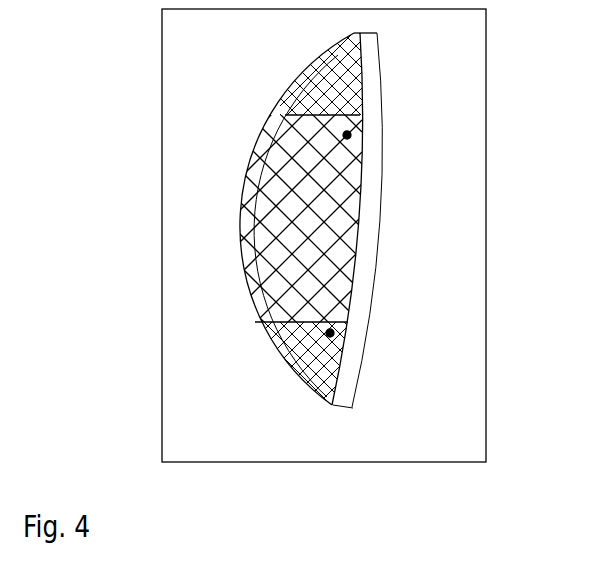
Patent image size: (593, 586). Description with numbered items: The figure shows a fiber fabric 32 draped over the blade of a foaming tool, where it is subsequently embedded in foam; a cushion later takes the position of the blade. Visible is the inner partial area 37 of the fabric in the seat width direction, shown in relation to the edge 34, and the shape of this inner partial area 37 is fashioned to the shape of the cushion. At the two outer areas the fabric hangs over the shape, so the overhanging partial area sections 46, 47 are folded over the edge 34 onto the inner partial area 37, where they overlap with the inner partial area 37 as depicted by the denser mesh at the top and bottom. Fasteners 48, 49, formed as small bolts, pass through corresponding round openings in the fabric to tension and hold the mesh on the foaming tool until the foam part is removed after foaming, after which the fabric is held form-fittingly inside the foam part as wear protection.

The fiber fabric 32 is at (282, 163).
The edge 34 is at (243, 208).
The inner partial area 37 is at (260, 290).
The overhanging partial area section 46 is at (312, 387).
The overhanging partial area section 47 is at (315, 73).
The fastener 48 is at (337, 330).
The fastener 49 is at (355, 133).